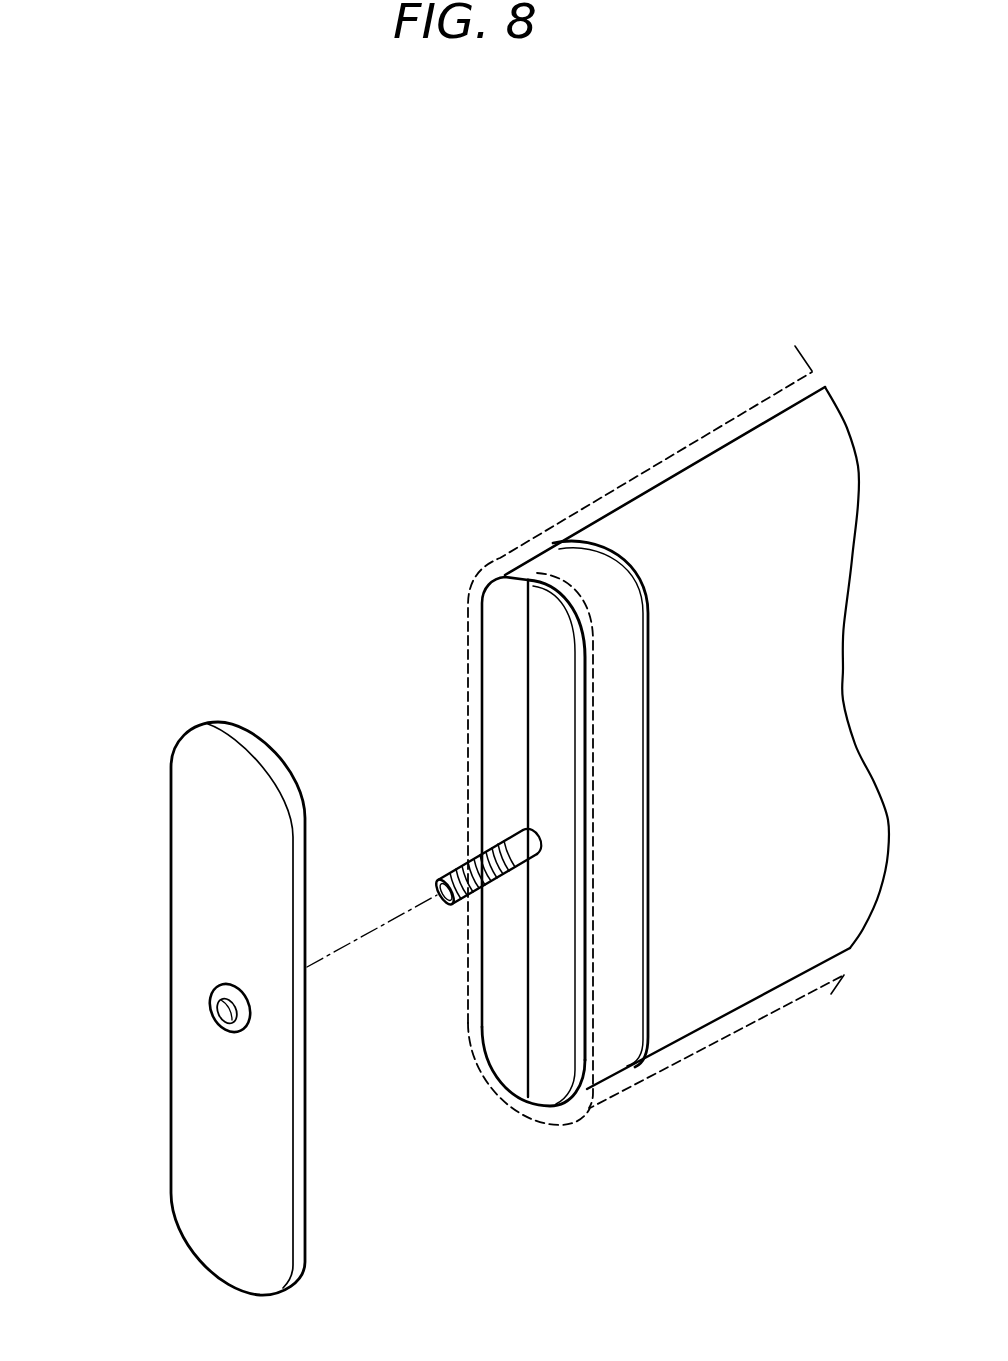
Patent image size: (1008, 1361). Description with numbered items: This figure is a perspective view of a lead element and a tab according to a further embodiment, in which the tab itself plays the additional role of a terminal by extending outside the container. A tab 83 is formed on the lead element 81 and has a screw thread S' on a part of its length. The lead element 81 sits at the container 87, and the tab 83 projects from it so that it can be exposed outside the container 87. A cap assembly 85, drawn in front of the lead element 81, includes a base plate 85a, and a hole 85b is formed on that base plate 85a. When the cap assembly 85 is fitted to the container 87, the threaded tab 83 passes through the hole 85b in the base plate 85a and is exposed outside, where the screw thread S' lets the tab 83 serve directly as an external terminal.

The lead element 81 is at (493, 646).
The tab 83 is at (501, 839).
The cap assembly 85 is at (181, 995).
The base plate 85a is at (195, 916).
The hole 85b is at (215, 1022).
The container 87 is at (623, 483).
The screw thread S' is at (384, 931).